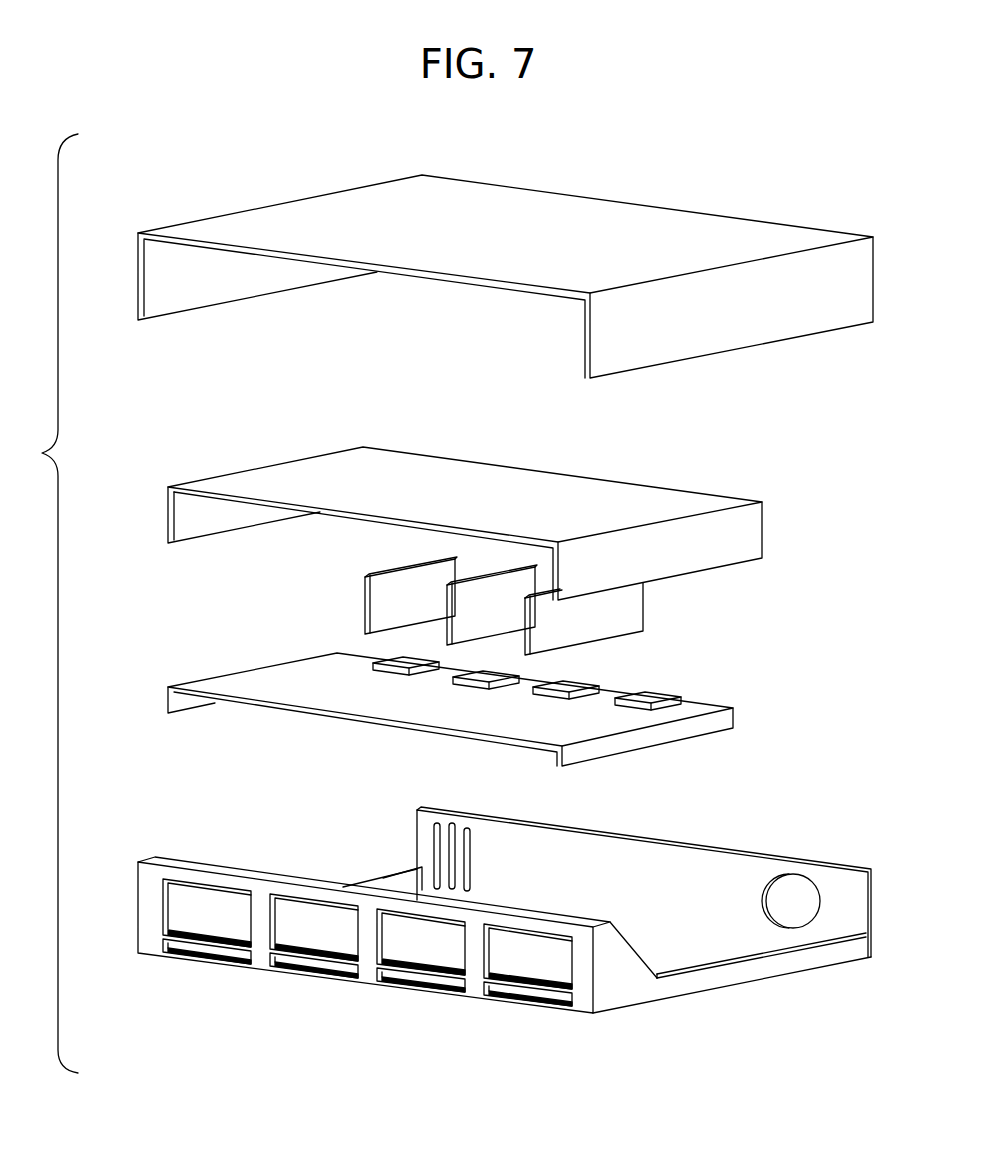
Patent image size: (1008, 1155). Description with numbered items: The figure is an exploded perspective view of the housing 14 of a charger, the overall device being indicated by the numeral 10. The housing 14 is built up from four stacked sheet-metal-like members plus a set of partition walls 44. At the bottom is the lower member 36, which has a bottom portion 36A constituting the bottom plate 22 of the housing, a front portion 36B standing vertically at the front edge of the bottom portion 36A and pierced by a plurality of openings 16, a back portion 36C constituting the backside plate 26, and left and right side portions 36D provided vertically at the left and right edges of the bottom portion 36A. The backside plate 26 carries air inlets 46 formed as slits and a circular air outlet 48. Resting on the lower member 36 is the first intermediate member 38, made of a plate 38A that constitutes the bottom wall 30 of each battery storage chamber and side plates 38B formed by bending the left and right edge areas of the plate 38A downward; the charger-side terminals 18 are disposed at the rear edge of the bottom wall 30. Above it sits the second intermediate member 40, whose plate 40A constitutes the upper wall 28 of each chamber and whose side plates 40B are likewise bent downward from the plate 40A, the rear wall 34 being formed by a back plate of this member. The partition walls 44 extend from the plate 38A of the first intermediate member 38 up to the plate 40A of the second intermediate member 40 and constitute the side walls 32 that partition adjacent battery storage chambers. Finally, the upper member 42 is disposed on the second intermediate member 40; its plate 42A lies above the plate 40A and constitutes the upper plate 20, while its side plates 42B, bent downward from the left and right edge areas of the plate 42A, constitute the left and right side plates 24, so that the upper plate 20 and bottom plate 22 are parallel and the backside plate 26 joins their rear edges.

The electronic device 10 is at (319, 66).
The housing 14 is at (684, 209).
The openings 16 is at (307, 903).
The charger-side terminals 18 is at (596, 673).
The upper plate 20 is at (515, 195).
The bottom plate 22 is at (670, 975).
The left and right side plates 24 is at (137, 263).
The backside plate 26 is at (640, 871).
The upper wall 28 is at (503, 483).
The bottom wall 30 is at (362, 697).
The side walls 32 is at (525, 616).
The rear wall 34 is at (768, 516).
The lower member 36 is at (156, 827).
The bottom portion 36A is at (732, 945).
The front portion 36B is at (351, 956).
The back portion 36C is at (585, 857).
The left and right side portions 36D is at (380, 880).
The first intermediate member 38 is at (161, 658).
The plate 38A is at (484, 723).
The side plates 38B is at (167, 699).
The second intermediate member 40 is at (152, 457).
The plate 40A is at (577, 493).
The side plates 40B is at (165, 521).
The upper member 42 is at (162, 184).
The plate 42A is at (612, 218).
The side plates 42B is at (136, 292).
The partition walls 44 is at (718, 612).
The air inlets 46 is at (434, 836).
The air outlet 48 is at (808, 906).